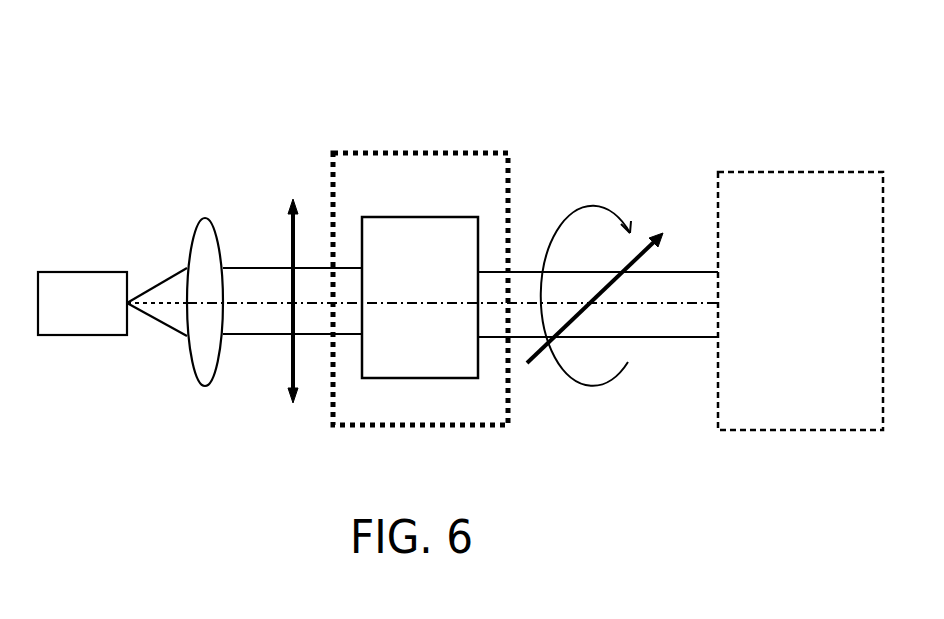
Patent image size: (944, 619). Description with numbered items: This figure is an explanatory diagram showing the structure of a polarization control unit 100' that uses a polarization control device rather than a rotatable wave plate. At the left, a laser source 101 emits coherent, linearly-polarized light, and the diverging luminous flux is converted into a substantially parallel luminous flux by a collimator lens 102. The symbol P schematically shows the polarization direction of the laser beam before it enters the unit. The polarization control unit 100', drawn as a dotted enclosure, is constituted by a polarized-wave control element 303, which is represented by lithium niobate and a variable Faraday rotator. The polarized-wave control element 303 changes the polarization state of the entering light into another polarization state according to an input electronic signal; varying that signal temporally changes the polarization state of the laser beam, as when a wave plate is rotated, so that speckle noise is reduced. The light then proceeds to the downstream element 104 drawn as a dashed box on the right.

The laser source 101 is at (78, 277).
The collimator lens 102 is at (205, 235).
The polarization direction P is at (287, 262).
The polarization control unit 100' is at (418, 249).
The polarized-wave control element 303 is at (427, 238).
The detector 104 is at (807, 172).